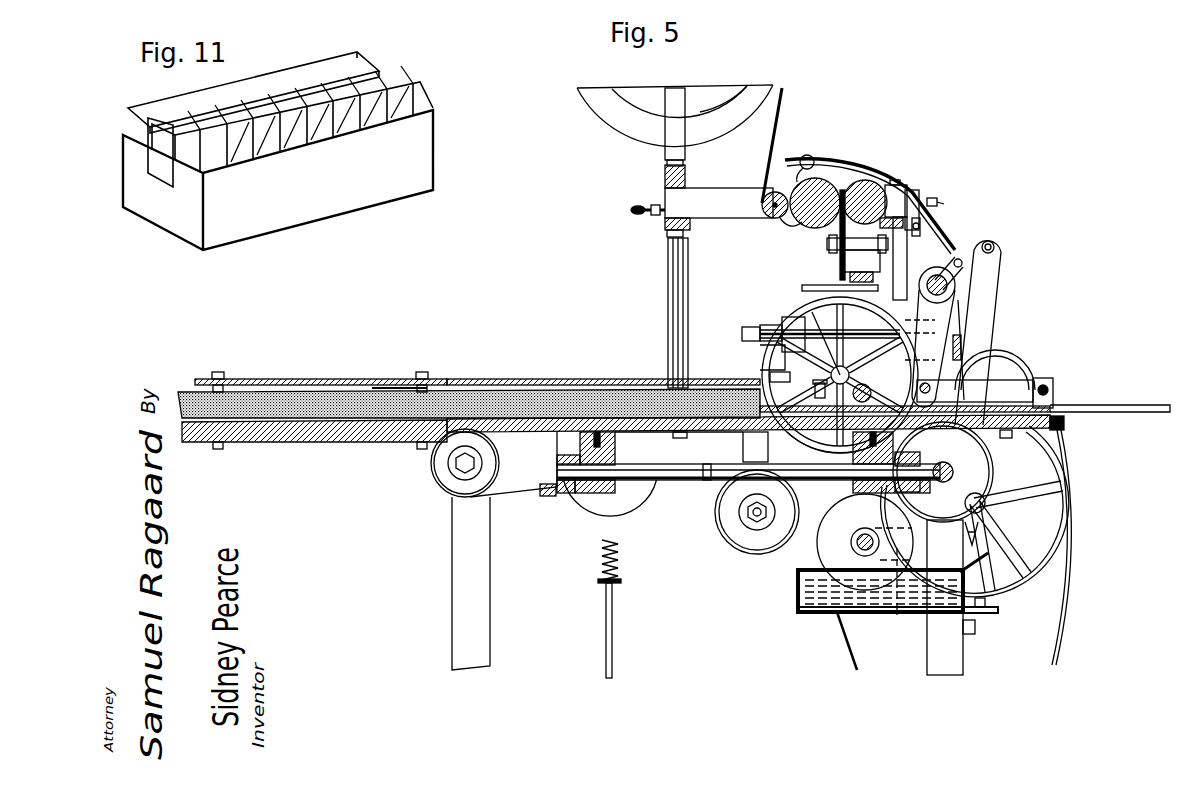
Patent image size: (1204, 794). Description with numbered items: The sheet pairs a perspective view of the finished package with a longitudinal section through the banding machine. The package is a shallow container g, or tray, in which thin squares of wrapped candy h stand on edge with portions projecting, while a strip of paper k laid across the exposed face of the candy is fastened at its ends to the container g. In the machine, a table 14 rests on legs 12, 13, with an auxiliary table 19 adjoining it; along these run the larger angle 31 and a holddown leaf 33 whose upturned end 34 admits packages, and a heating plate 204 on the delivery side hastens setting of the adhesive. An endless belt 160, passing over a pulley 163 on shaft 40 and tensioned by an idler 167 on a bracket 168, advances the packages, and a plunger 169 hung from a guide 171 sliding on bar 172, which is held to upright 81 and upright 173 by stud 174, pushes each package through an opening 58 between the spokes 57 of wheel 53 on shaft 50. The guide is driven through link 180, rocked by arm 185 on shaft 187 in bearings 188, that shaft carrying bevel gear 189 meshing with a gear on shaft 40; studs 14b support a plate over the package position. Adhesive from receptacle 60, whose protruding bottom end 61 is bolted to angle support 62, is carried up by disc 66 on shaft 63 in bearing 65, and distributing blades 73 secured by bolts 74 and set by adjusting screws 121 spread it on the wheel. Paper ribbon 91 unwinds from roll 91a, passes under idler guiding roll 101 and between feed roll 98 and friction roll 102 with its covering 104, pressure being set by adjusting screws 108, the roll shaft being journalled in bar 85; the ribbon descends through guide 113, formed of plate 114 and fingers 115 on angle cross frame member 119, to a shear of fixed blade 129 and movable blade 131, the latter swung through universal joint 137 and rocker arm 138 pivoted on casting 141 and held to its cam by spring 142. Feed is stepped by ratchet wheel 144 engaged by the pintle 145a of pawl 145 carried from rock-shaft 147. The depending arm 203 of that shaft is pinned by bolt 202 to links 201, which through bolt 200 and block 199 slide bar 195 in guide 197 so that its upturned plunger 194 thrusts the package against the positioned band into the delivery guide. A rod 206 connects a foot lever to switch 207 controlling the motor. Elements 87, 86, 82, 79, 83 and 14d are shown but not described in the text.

In FIG. 11, the shallow container g is at (283, 222).
In FIG. 11, the wrapped candy squares h is at (296, 130).
In FIG. 11, the paper band k is at (382, 70).
In FIG. 5, the hopper bowl 87 is at (668, 100).
In FIG. 5, the ribbon 91 is at (778, 110).
In FIG. 5, the ribbon roll 91a is at (746, 105).
In FIG. 5, the collar 86 is at (665, 175).
In FIG. 5, the longitudinal bar 85 is at (710, 195).
In FIG. 5, the collar 82 is at (665, 225).
In FIG. 5, the column 79 is at (676, 278).
In FIG. 5, the idler guiding roll 101 is at (770, 218).
In FIG. 5, the feed roll 98 is at (820, 180).
In FIG. 5, the cushioned friction roll 102 is at (872, 182).
In FIG. 5, the ratchet engaging pintle 145a is at (806, 155).
In FIG. 5, the pawl 145 is at (856, 172).
In FIG. 5, the covering 104 is at (887, 182).
In FIG. 5, the adjusting screws 108 is at (935, 198).
In FIG. 5, the bolt 83 is at (916, 232).
In FIG. 5, the upright post 81 is at (900, 248).
In FIG. 5, the ratchet wheel 144 is at (792, 228).
In FIG. 5, the ribbon guide 113 is at (827, 244).
In FIG. 5, the guide plate 114 is at (838, 262).
In FIG. 5, the spaced fingers 115 is at (848, 275).
In FIG. 5, the movable shear blade 131 is at (802, 288).
In FIG. 5, the track bar 172 is at (812, 312).
In FIG. 5, the plunger guide 171 is at (770, 325).
In FIG. 5, the link 180 is at (742, 334).
In FIG. 5, the fixed shear blade 129 is at (862, 284).
In FIG. 5, the spoked wheel 53 is at (768, 352).
In FIG. 5, the openings 58 is at (772, 376).
In FIG. 5, the spokes 57 is at (832, 348).
In FIG. 5, the wheel shaft 50 is at (858, 384).
In FIG. 5, the studs 14b is at (826, 390).
In FIG. 5, the bolt 202 is at (920, 385).
In FIG. 5, the heating means 204 is at (310, 379).
In FIG. 5, the holddown leaf 33 is at (572, 379).
In FIG. 5, the larger angle 31 is at (380, 388).
In FIG. 5, the upturned end 34 is at (400, 378).
In FIG. 5, the plunger plate 194 is at (712, 389).
In FIG. 5, the auxiliary table 19 is at (365, 442).
In FIG. 5, the table 14 is at (706, 432).
In FIG. 5, the block 14d is at (758, 462).
In FIG. 5, the plunger 169 is at (798, 430).
In FIG. 5, the bracket 168 is at (740, 462).
In FIG. 5, the bearings 188 is at (580, 444).
In FIG. 5, the arm 185 is at (578, 492).
In FIG. 5, the endless belt 160 is at (518, 492).
In FIG. 5, the leg 13 is at (462, 612).
In FIG. 5, the switch 207 is at (586, 525).
In FIG. 5, the rod 206 is at (614, 628).
In FIG. 5, the shaft 187 is at (704, 486).
In FIG. 5, the idler 167 is at (740, 532).
In FIG. 5, the disc 66 is at (826, 542).
In FIG. 5, the disc shaft 63 is at (860, 550).
In FIG. 5, the bearing 65 is at (897, 616).
In FIG. 5, the receptacle 60 is at (798, 604).
In FIG. 5, the protruding bottom end 61 is at (995, 607).
In FIG. 5, the angle support 62 is at (976, 626).
In FIG. 5, the leg 12 is at (950, 660).
In FIG. 5, the spring 142 is at (978, 530).
In FIG. 5, the pulley 163 is at (980, 470).
In FIG. 5, the bevel gear 189 is at (950, 480).
In FIG. 5, the main shaft 40 is at (990, 497).
In FIG. 5, the distributing blades 73 is at (1068, 470).
In FIG. 5, the bolts 74 is at (1008, 438).
In FIG. 5, the adjusting screws 121 is at (1066, 426).
In FIG. 5, the guide 197 is at (1114, 389).
In FIG. 5, the block 199 is at (1053, 390).
In FIG. 5, the bolt 200 is at (1044, 384).
In FIG. 5, the plunger bar 195 is at (1012, 402).
In FIG. 5, the links 201 is at (1015, 376).
In FIG. 5, the universal joint 137 is at (984, 240).
In FIG. 5, the rocker arm 138 is at (990, 292).
In FIG. 5, the rock-shaft 147 is at (963, 266).
In FIG. 5, the angle cross frame member 119 is at (934, 288).
In FIG. 5, the upright 173 is at (912, 322).
In FIG. 5, the arm 203 is at (960, 328).
In FIG. 5, the casting 141 is at (961, 349).
In FIG. 5, the stud 174 is at (905, 333).